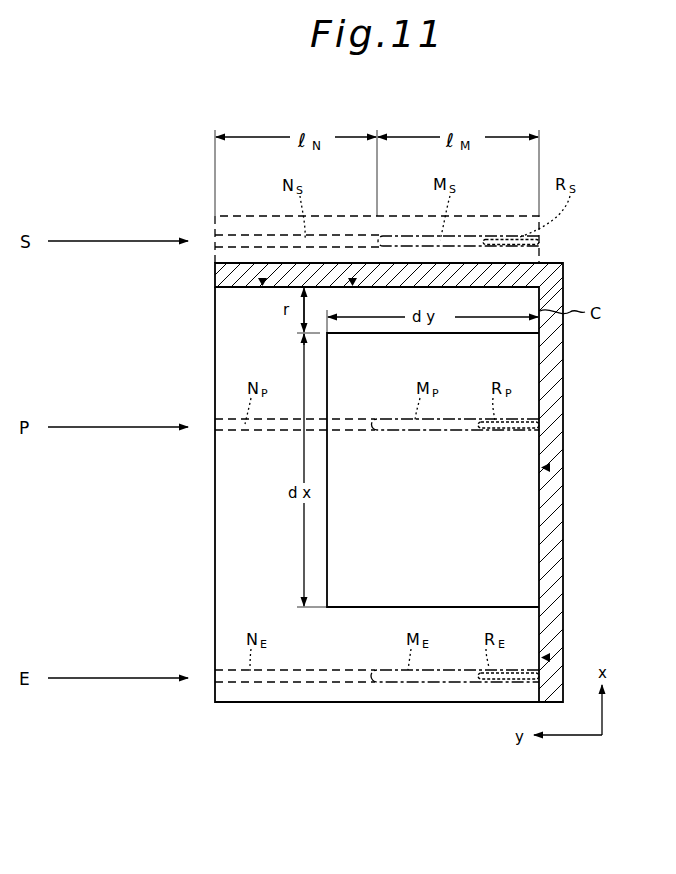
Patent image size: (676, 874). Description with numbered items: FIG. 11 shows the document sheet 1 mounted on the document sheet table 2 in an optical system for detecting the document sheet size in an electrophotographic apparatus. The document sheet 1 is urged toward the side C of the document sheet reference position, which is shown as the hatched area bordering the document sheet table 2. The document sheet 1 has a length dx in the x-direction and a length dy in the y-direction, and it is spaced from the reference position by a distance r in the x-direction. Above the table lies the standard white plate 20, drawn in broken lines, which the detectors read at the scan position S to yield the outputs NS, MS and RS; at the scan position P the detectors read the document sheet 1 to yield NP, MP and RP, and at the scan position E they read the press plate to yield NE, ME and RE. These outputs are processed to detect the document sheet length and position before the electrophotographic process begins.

The document sheet 1 is at (515, 553).
The document sheet table 2 is at (215, 556).
The standard white plate 20 is at (238, 216).